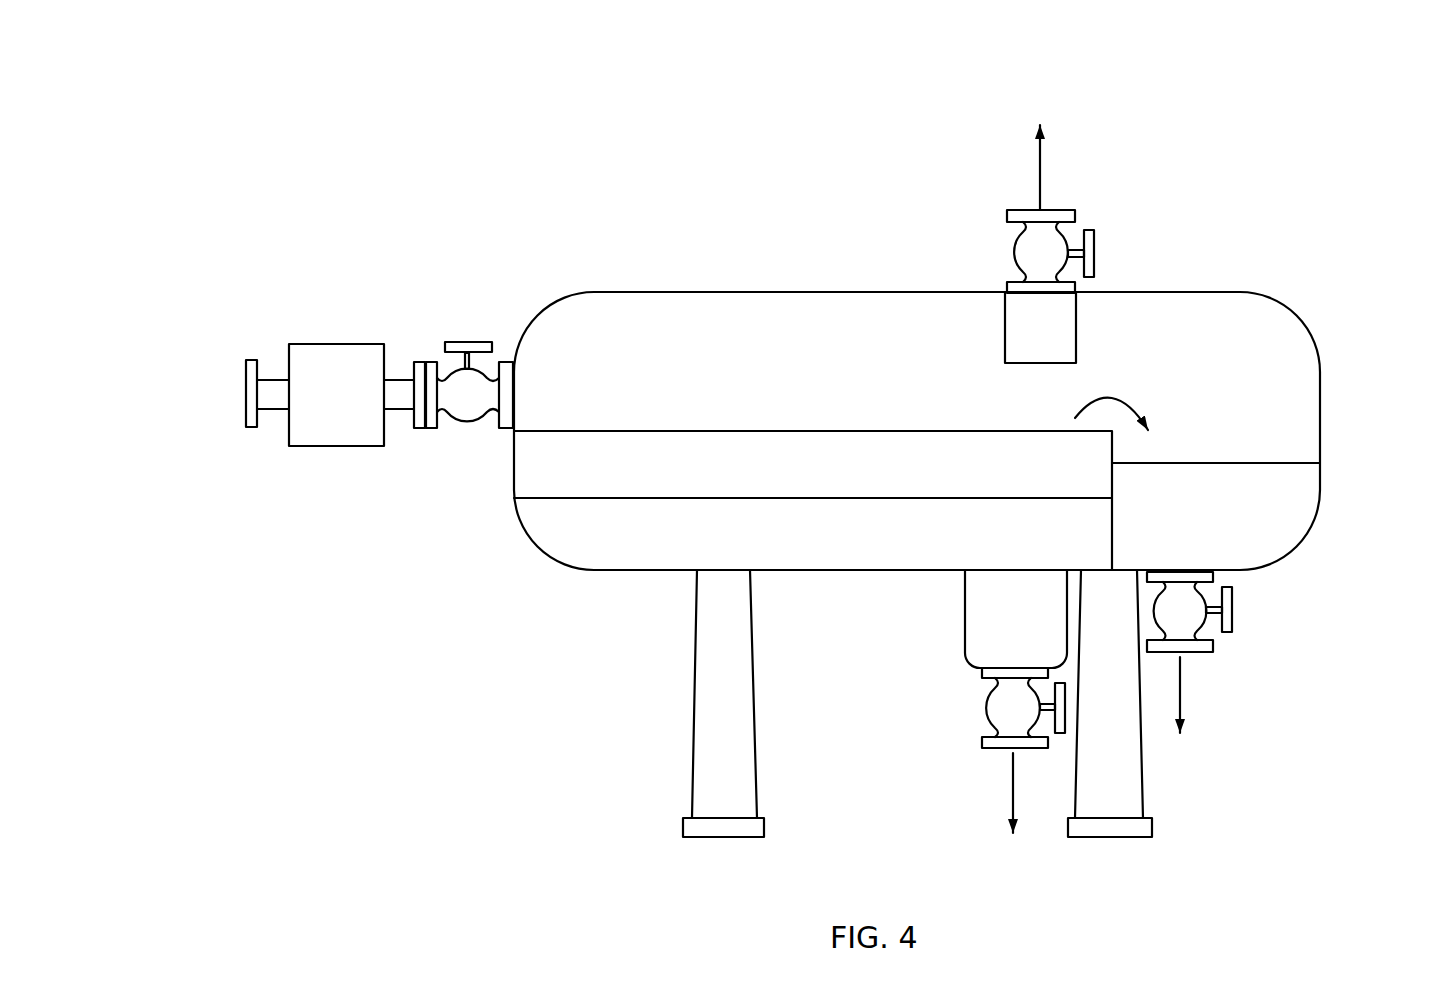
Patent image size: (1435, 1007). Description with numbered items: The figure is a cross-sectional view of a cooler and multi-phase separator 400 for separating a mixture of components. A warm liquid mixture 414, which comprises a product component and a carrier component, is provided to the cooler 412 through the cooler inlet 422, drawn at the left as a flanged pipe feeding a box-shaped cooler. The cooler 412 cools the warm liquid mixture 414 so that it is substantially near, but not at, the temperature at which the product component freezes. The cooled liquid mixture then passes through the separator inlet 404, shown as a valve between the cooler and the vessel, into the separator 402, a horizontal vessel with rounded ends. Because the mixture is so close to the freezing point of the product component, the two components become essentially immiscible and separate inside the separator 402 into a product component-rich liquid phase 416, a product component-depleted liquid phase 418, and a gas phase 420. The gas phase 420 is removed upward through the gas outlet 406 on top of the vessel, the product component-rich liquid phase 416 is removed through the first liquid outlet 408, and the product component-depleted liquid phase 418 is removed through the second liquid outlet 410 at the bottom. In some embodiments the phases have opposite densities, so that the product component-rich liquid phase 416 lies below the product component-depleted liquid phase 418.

The cooler and multi-phase separator 400 is at (275, 87).
The separator 402 is at (770, 292).
The separator inlet 404 is at (462, 423).
The gas outlet 406 is at (1013, 252).
The first liquid outlet 408 is at (1203, 627).
The second liquid outlet 410 is at (986, 705).
The cooler 412 is at (329, 344).
The warm liquid mixture 414 is at (243, 396).
The product component-rich liquid phase 416 is at (548, 472).
The product component-depleted liquid phase 418 is at (582, 542).
The gas phase 420 is at (950, 398).
The cooler inlet 422 is at (280, 410).